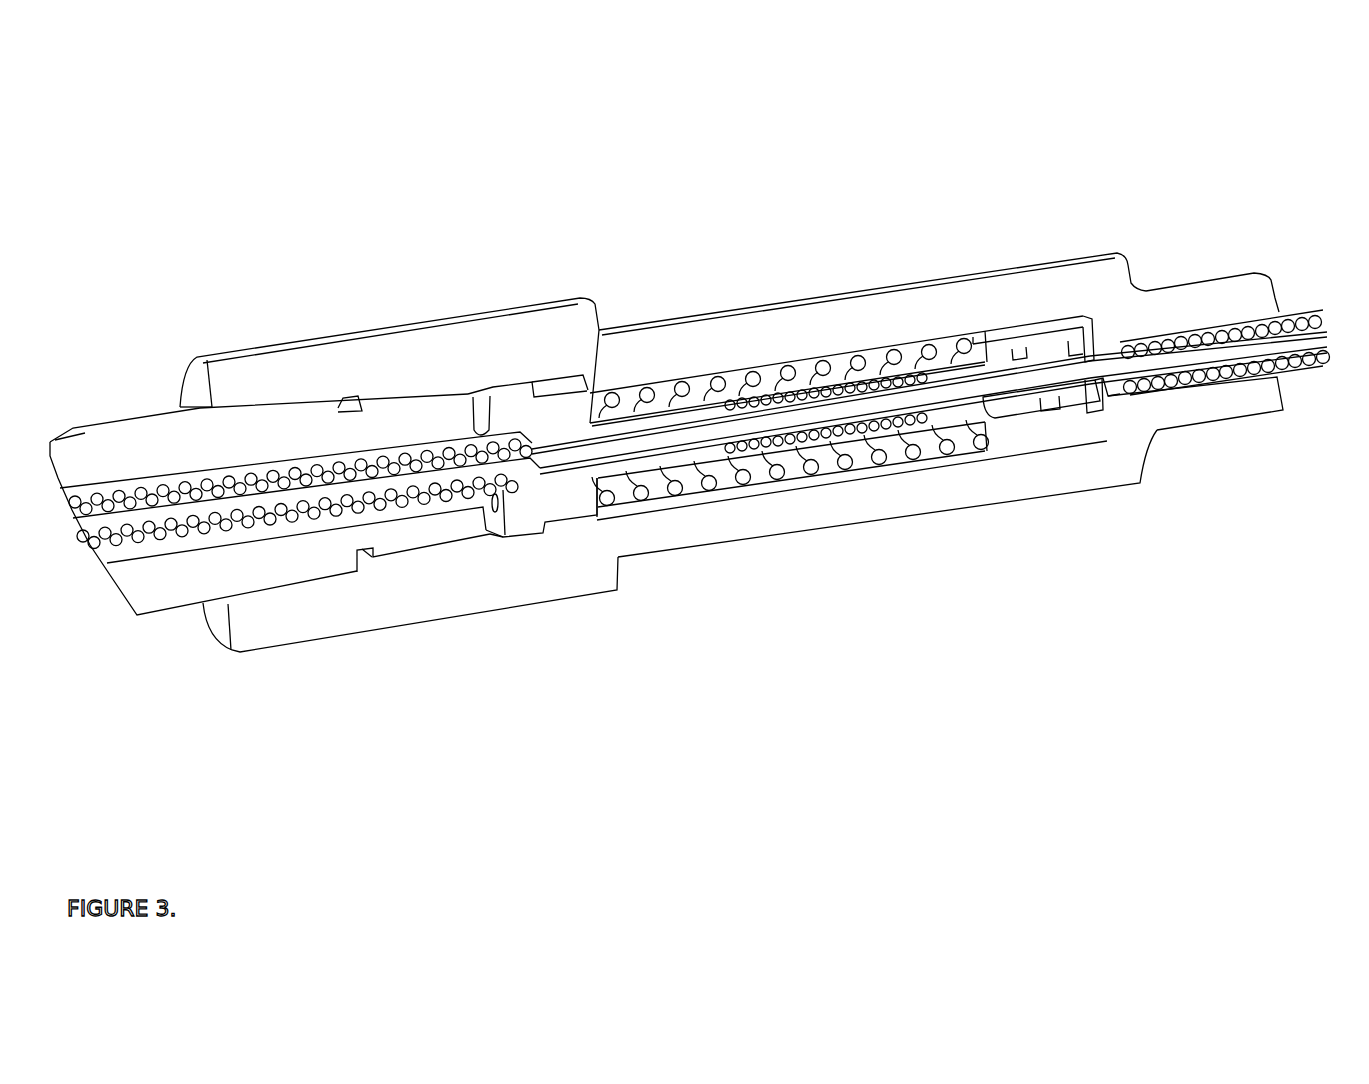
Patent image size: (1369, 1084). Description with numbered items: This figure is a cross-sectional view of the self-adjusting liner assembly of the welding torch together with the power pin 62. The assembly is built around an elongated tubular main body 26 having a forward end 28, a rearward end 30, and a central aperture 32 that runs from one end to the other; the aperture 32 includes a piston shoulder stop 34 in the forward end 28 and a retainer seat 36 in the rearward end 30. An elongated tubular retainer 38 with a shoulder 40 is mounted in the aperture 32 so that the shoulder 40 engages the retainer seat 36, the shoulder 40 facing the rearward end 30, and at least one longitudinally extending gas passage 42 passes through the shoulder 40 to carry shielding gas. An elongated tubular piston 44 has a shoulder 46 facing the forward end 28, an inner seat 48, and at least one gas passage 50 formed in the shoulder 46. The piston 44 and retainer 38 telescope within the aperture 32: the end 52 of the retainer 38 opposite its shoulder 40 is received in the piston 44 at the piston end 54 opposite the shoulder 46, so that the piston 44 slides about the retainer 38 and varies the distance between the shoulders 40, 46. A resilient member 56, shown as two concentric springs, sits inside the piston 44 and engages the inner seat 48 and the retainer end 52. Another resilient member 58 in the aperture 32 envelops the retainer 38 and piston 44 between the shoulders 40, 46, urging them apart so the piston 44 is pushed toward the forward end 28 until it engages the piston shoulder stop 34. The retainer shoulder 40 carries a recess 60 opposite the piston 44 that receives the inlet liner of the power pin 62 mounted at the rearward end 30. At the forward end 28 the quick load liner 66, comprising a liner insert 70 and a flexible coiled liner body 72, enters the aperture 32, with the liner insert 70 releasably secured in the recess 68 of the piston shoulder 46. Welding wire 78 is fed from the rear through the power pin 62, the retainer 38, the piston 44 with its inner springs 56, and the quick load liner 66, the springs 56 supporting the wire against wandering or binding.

The main body 26 is at (975, 513).
The forward end 28 is at (1266, 407).
The rearward end 30 is at (183, 377).
The central aperture 32 is at (620, 498).
The piston shoulder stop 34 is at (1098, 410).
The retainer seat 36 is at (590, 386).
The retainer 38 is at (580, 500).
The retainer shoulder 40 is at (597, 513).
The gas passage 42 is at (485, 418).
The piston 44 is at (928, 430).
The piston shoulder 46 is at (997, 463).
The inner seat 48 is at (913, 367).
The gas passage 50 is at (983, 343).
The retainer end 52 is at (723, 412).
The piston end 54 is at (720, 463).
The resilient member 56 is at (887, 437).
The resilient member 58 is at (645, 493).
The recess 60 is at (513, 535).
The power pin 62 is at (167, 608).
The quick load liner 66 is at (1243, 330).
The recess 68 is at (1087, 350).
The liner insert 70 is at (1118, 403).
The liner body 72 is at (1308, 313).
The welding wire 78 is at (1262, 350).